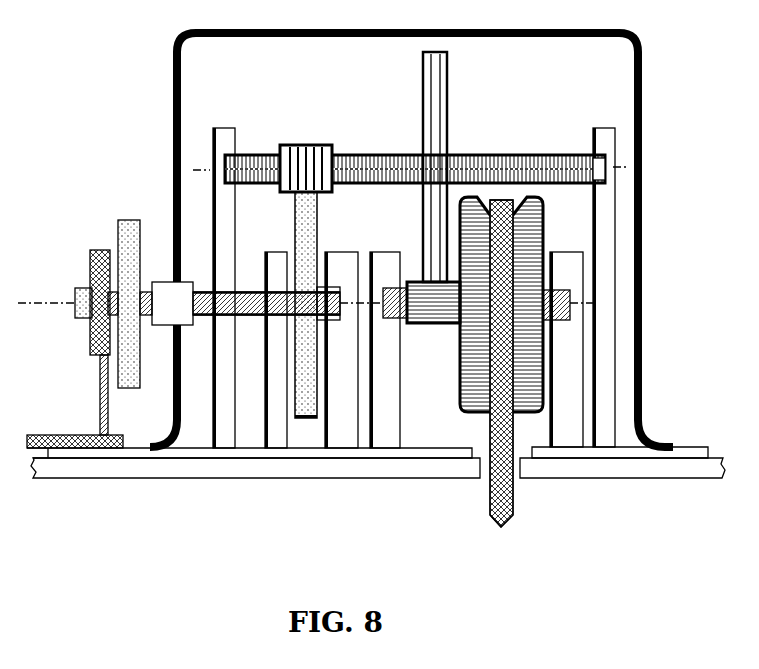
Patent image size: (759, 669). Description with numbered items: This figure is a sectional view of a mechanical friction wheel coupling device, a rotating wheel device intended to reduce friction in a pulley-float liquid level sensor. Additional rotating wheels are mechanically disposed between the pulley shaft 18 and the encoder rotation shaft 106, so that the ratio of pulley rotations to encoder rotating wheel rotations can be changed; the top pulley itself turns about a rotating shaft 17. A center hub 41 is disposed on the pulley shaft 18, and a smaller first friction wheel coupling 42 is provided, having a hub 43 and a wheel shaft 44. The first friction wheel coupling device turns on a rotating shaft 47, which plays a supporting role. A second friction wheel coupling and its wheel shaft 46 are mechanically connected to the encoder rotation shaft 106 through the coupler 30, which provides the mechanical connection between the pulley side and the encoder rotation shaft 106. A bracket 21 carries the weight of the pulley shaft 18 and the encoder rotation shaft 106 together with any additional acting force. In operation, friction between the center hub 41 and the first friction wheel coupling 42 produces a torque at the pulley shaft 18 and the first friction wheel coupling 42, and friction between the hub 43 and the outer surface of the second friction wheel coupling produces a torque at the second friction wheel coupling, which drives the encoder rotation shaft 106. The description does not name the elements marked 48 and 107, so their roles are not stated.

The rotating shaft 17 is at (577, 303).
The pulley shaft 18 is at (548, 332).
The bracket 21 is at (513, 493).
The coupler 30 is at (163, 283).
The center hub 41 is at (423, 325).
The first friction wheel coupling 42 is at (450, 137).
The hub 43 is at (313, 145).
The wheel shaft 44 is at (572, 153).
The wheel shaft 46 is at (315, 418).
The rotating shaft 47 is at (619, 168).
The shaft 48 is at (205, 318).
The encoder rotation shaft 106 is at (78, 288).
The axis 107 is at (42, 302).